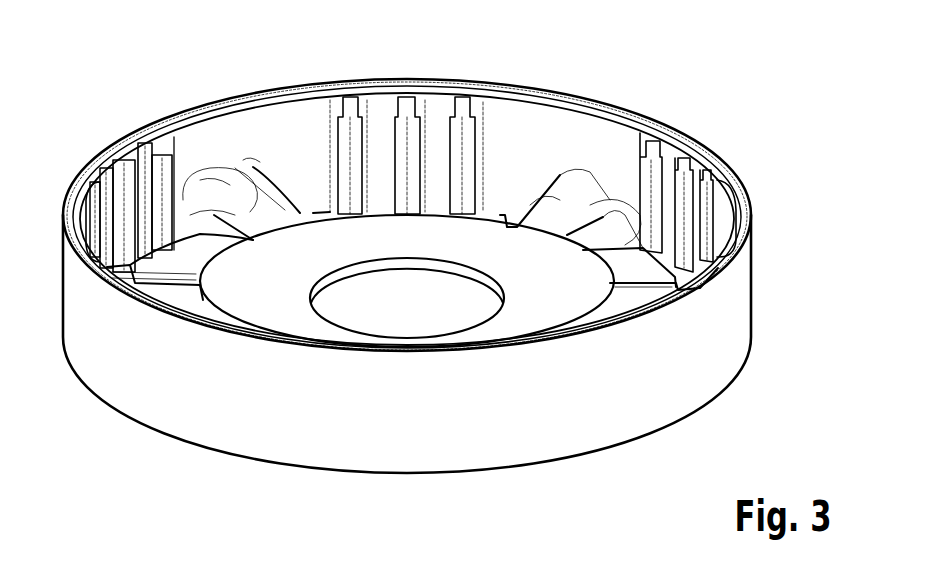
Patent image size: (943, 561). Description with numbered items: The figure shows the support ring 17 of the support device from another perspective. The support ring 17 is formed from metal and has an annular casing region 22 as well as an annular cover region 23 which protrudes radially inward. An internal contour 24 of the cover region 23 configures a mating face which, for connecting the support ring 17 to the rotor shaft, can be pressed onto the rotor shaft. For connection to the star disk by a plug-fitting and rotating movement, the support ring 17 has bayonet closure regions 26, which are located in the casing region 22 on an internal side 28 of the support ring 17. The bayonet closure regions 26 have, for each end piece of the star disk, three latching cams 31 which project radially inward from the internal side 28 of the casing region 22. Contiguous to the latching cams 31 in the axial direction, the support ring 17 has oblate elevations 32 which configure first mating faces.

The support ring 17 is at (751, 290).
The casing region 22 is at (627, 395).
The cover region 23 is at (265, 290).
The internal contour 24 is at (356, 268).
The bayonet closure region 26 is at (438, 112).
The internal side 28 is at (282, 132).
The latching cams 31 is at (468, 128).
The oblate elevations 32 is at (348, 137).